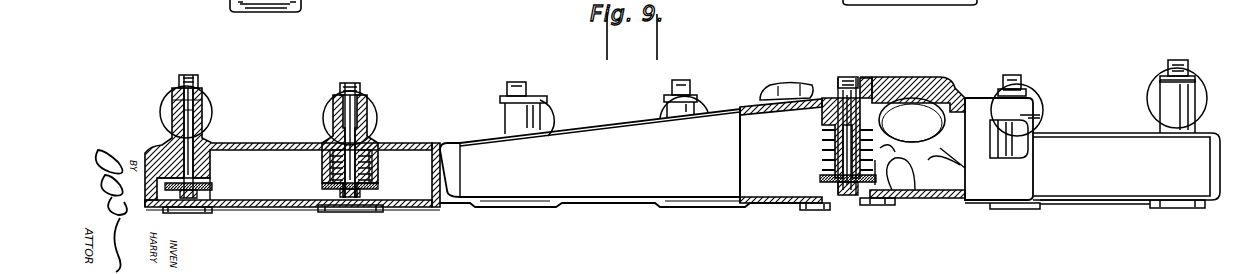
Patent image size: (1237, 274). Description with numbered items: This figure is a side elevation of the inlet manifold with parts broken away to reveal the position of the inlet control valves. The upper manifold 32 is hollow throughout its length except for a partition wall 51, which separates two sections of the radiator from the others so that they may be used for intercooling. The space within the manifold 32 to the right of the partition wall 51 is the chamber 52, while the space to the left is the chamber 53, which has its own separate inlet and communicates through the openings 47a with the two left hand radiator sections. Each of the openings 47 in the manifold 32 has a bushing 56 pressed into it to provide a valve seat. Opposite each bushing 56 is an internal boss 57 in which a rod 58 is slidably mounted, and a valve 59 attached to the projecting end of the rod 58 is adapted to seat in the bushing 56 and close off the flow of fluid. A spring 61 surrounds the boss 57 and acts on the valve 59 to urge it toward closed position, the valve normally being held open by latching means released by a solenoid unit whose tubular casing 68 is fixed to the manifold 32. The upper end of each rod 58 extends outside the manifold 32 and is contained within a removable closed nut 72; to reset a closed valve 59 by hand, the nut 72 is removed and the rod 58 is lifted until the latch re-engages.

The upper manifold 32 is at (640, 158).
The openings 47 is at (815, 210).
The openings 47a is at (218, 213).
The partition wall 51 is at (436, 143).
The chamber 52 is at (772, 157).
The chamber 53 is at (258, 170).
The bushing 56 is at (383, 212).
The internal boss 57 is at (330, 162).
The rod 58 is at (165, 122).
The valve 59 is at (379, 183).
The spring 61 is at (373, 158).
The tubular casing 68 is at (318, 106).
The closed nut 72 is at (190, 74).